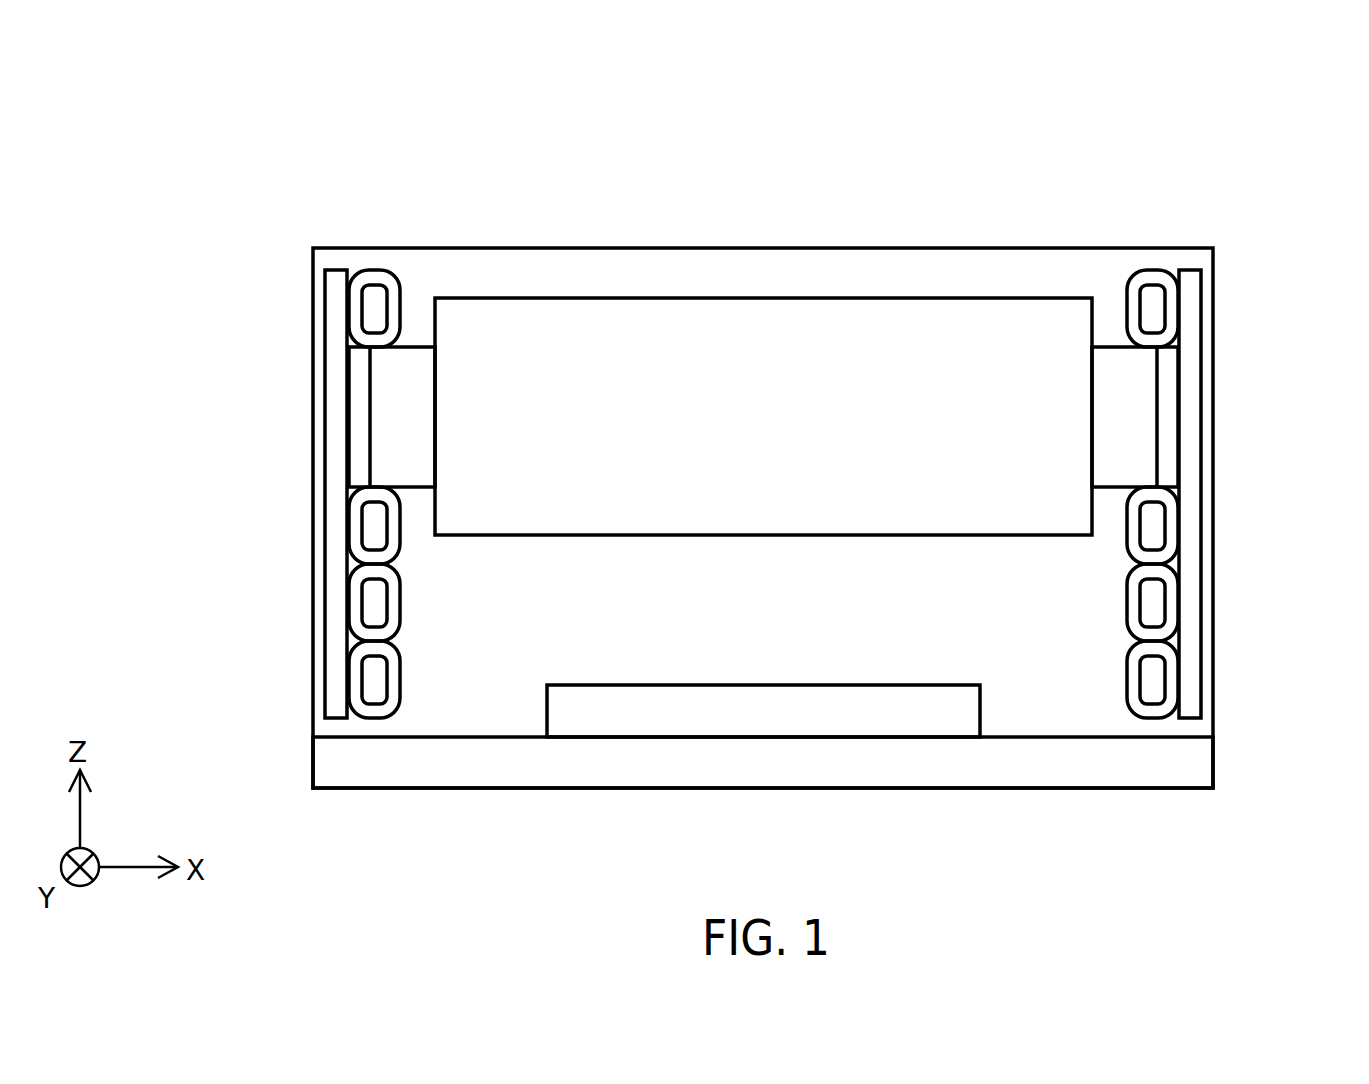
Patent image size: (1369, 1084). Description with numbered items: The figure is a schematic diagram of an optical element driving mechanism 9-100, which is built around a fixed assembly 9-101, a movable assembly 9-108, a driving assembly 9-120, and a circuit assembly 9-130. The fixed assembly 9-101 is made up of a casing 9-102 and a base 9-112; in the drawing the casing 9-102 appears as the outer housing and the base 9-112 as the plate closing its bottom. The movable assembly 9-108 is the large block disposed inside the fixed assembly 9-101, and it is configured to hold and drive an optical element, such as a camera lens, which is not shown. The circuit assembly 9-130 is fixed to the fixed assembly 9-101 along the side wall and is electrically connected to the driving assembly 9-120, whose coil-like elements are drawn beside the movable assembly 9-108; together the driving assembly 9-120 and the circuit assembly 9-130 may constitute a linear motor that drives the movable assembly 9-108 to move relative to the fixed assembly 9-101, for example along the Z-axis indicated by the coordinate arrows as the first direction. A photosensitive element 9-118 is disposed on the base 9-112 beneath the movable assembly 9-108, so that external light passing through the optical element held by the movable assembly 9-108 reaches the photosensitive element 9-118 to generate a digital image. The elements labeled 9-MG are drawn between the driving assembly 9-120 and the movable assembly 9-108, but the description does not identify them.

The optical element driving mechanism 9-100 is at (260, 74).
The fixed assembly 9-101 is at (382, 246).
The casing 9-102 is at (317, 555).
The movable assembly 9-108 is at (769, 295).
The base 9-112 is at (360, 768).
The photosensitive element 9-118 is at (763, 718).
The driving assembly 9-120 is at (1127, 266).
The circuit assembly 9-130 is at (1212, 601).
The magnetic permeable element 9-MG is at (405, 428).